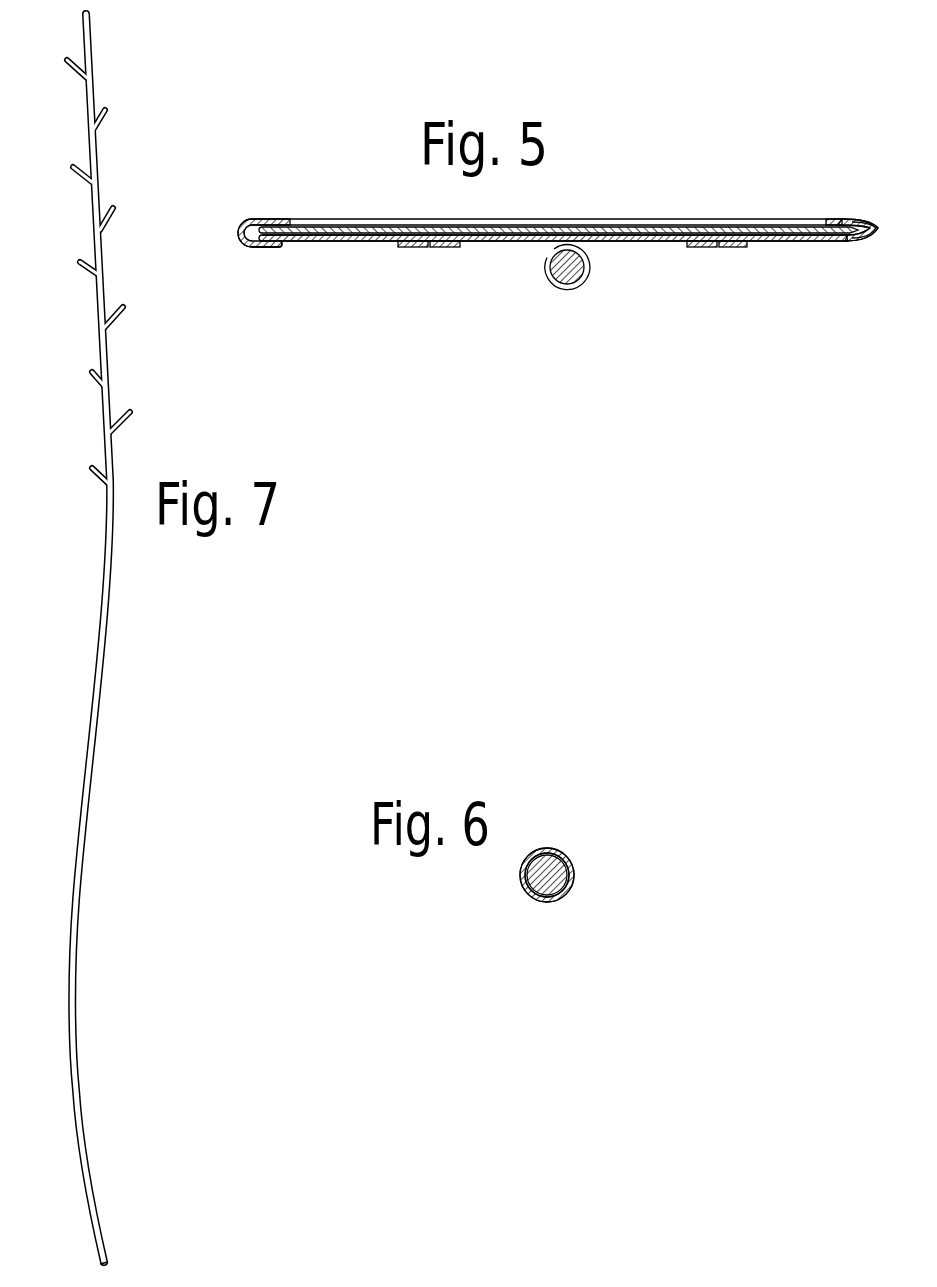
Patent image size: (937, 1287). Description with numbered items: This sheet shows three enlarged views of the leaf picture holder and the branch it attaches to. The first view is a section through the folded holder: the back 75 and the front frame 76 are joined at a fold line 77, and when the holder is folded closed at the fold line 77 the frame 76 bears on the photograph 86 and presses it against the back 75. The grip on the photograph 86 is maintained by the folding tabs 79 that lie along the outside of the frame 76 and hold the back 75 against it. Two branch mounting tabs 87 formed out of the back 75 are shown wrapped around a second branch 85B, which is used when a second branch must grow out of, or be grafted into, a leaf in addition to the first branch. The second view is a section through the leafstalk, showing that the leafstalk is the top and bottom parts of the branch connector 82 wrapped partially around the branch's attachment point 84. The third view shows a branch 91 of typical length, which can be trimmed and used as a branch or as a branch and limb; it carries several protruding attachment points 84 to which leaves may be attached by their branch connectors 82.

In FIG. 5, the back 75 is at (340, 246).
In FIG. 5, the front frame 76 is at (290, 219).
In FIG. 5, the fold line 77 is at (880, 222).
In FIG. 5, the folding tabs 79 is at (272, 249).
In FIG. 5, the second branch 85B is at (554, 249).
In FIG. 5, the photograph 86 is at (675, 224).
In FIG. 5, the branch mounting tabs 87 is at (594, 278).
In FIG. 6, the branch connector 82 is at (578, 858).
In FIG. 6, the attachment point 84 is at (554, 890).
In FIG. 7, the attachment point 84 is at (73, 181).
In FIG. 7, the branch 91 is at (93, 639).